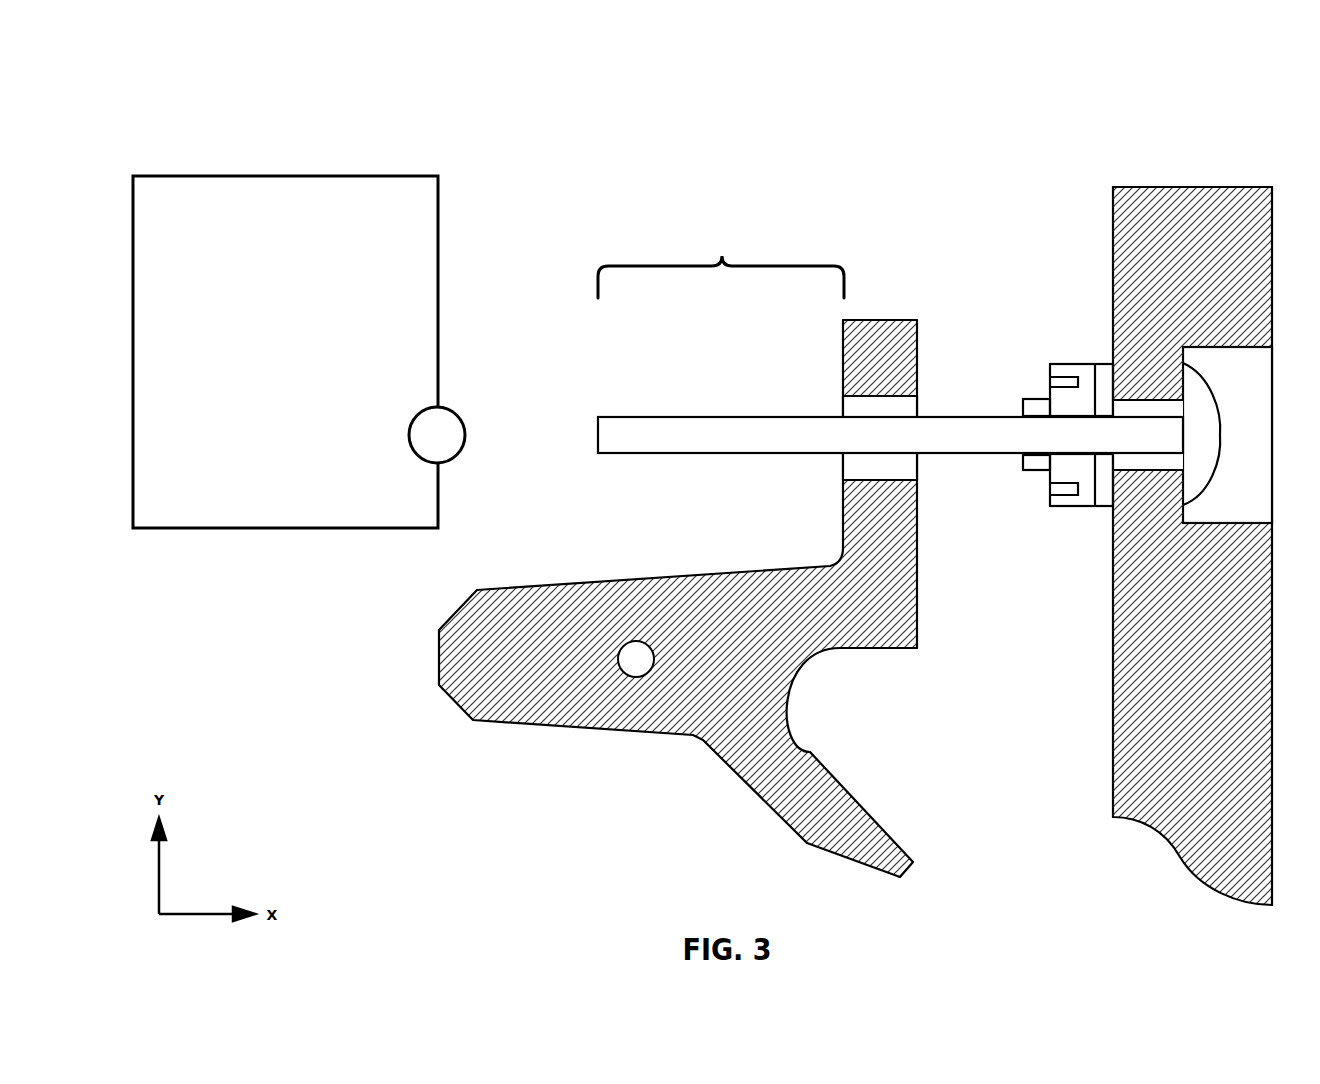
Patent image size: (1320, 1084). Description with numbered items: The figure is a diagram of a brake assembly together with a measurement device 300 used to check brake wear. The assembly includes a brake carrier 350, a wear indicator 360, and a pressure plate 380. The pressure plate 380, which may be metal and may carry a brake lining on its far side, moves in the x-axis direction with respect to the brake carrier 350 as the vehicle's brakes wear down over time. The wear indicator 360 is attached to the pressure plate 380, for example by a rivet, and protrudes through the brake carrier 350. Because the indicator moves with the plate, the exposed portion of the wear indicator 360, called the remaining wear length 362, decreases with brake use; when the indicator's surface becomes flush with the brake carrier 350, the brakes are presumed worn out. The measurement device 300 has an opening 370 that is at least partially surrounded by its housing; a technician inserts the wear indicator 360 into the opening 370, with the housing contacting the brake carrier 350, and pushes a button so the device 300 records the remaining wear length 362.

The measurement device 300 is at (267, 392).
The brake carrier 350 is at (588, 728).
The wear indicator 360 is at (640, 453).
The remaining wear length 362 is at (722, 256).
The opening 370 is at (450, 408).
The pressure plate 380 is at (1190, 187).